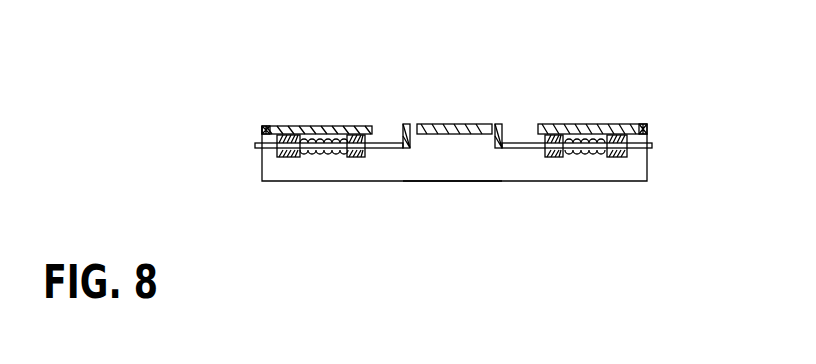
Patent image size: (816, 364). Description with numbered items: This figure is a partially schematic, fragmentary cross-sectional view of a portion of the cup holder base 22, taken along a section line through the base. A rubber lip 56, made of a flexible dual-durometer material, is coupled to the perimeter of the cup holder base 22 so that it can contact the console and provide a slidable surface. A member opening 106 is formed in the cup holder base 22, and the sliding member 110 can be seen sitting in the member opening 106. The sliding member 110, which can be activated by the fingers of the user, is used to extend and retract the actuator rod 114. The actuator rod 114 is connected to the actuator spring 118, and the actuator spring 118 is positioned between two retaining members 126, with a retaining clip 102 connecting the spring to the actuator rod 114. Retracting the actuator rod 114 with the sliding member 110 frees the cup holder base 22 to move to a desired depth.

The cup holder base 22 is at (330, 125).
The rubber lip 56 is at (646, 123).
The retaining clip 102 is at (310, 148).
The member opening 106 is at (391, 127).
The sliding member 110 is at (410, 133).
The actuator rod 114 is at (640, 147).
The actuator spring 118 is at (585, 133).
The retaining members 126 is at (288, 156).